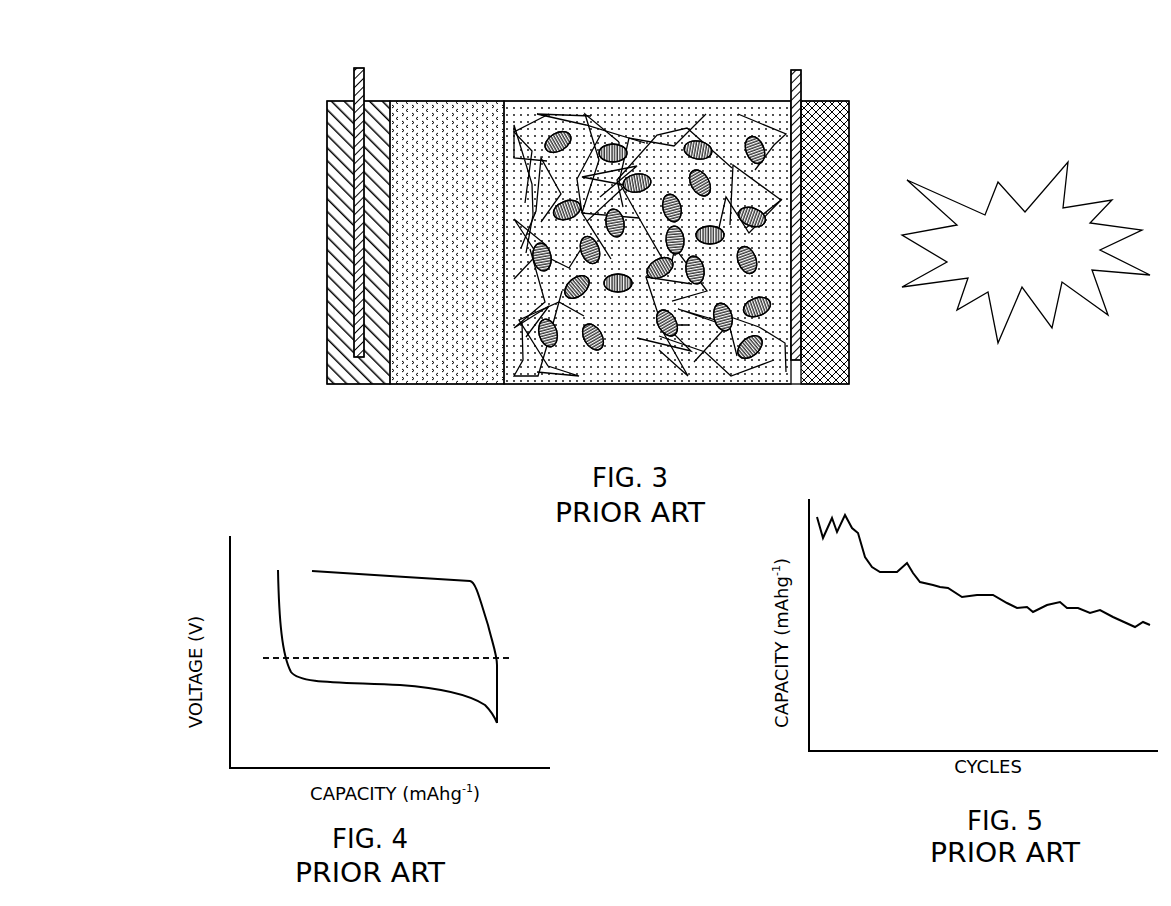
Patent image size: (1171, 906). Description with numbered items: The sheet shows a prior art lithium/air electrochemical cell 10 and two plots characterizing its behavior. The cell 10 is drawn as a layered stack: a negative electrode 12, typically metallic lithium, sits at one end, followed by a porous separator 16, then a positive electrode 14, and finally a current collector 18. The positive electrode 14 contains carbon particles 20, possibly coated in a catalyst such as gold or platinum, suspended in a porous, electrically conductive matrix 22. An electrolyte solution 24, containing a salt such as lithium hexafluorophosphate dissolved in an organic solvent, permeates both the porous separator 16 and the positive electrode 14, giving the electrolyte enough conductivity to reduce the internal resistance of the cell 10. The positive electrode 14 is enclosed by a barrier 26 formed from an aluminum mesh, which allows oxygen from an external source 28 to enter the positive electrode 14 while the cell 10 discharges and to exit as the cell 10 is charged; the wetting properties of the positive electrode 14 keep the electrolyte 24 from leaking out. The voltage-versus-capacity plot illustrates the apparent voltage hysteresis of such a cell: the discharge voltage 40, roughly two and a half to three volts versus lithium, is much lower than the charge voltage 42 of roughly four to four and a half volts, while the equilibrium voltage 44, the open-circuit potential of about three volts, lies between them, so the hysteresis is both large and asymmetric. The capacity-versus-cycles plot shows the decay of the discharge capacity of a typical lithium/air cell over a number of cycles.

In FIG. 3, the electrochemical cell 10 is at (258, 62).
In FIG. 3, the negative electrode 12 is at (327, 195).
In FIG. 3, the positive electrode 14 is at (748, 384).
In FIG. 3, the porous separator 16 is at (432, 384).
In FIG. 3, the current collector 18 is at (801, 87).
In FIG. 3, the carbon particles 20 is at (548, 128).
In FIG. 3, the porous, electrically conductive matrix 22 is at (655, 127).
In FIG. 3, the electrolyte solution 24 is at (640, 370).
In FIG. 3, the barrier 26 is at (849, 115).
In FIG. 3, the external source 28 is at (1061, 174).
In FIG. 4, the discharge voltage 40 is at (392, 685).
In FIG. 4, the charge voltage 42 is at (487, 608).
In FIG. 4, the equilibrium voltage 44 is at (313, 658).